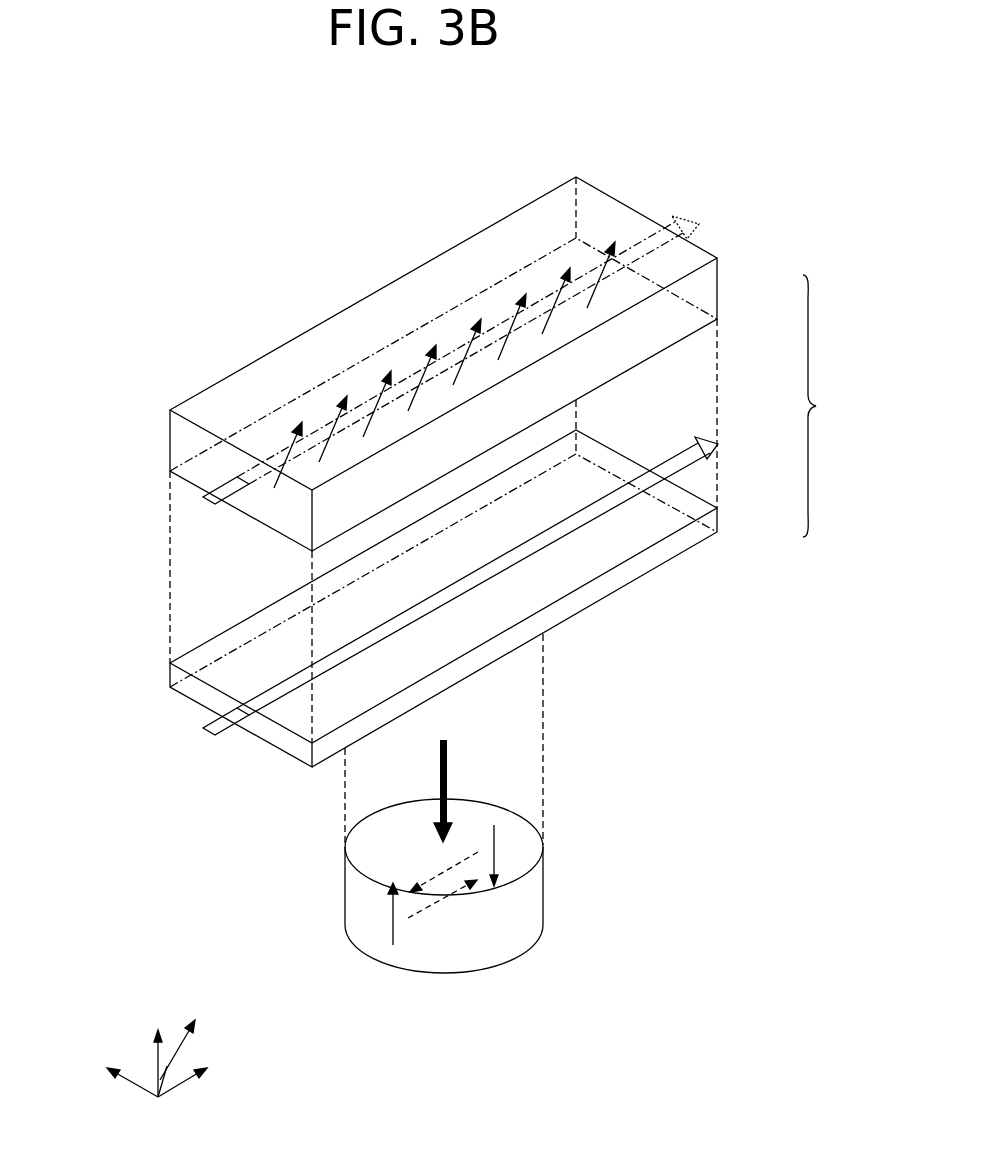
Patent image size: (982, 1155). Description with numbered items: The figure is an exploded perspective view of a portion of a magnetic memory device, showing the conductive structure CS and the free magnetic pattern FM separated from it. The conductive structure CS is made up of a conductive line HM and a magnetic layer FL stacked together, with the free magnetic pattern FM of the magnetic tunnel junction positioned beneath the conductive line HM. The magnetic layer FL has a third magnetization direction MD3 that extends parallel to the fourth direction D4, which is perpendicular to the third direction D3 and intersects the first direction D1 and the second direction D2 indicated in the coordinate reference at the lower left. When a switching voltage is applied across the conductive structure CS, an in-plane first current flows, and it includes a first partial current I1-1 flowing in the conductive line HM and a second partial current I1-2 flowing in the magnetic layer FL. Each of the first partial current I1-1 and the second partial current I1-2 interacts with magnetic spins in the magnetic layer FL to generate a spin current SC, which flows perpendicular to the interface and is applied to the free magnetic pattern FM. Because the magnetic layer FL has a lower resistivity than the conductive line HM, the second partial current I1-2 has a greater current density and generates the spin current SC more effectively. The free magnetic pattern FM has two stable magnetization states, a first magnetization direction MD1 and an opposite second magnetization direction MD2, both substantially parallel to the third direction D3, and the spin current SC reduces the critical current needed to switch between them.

The magnetic layer FL is at (706, 288).
The conductive line HM is at (706, 523).
The conductive structure CS is at (825, 406).
The free magnetic pattern FM is at (546, 886).
The spin current SC is at (440, 765).
The first magnetization direction MD1 is at (393, 935).
The second magnetization direction MD2 is at (520, 862).
The third magnetization direction MD3 is at (284, 448).
The first partial current I1-1 is at (593, 520).
The second partial current I1-2 is at (681, 214).
The first direction D1 is at (198, 1077).
The second direction D2 is at (116, 1077).
The third direction D3 is at (157, 1050).
The fourth direction D4 is at (189, 1046).